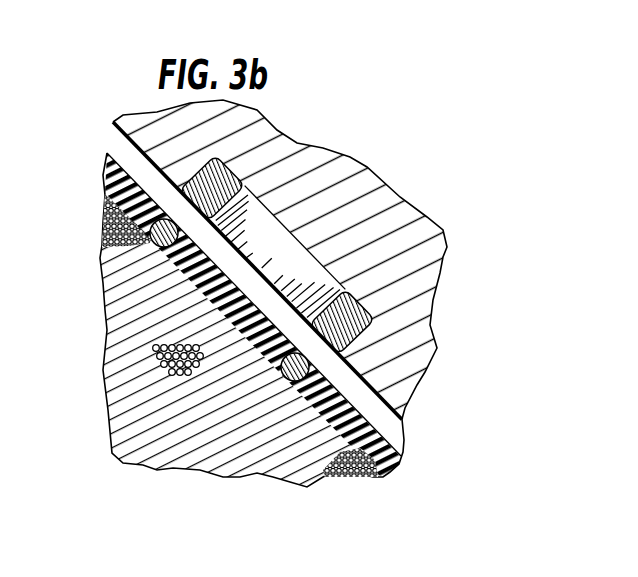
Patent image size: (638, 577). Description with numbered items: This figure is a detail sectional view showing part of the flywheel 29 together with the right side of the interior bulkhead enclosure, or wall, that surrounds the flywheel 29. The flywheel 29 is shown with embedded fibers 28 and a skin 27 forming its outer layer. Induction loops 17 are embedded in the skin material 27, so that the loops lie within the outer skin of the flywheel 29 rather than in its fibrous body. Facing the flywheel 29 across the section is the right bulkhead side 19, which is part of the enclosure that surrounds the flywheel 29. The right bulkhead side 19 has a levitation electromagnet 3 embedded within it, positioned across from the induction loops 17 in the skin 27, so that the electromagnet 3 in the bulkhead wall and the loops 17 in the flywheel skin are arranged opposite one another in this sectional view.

The levitation electromagnet 3 is at (373, 319).
The induction loops 17 is at (153, 242).
The right bulkhead side 19 is at (427, 253).
The skin 27 is at (403, 450).
The embedded fibers 28 is at (347, 480).
The flywheel 29 is at (158, 467).